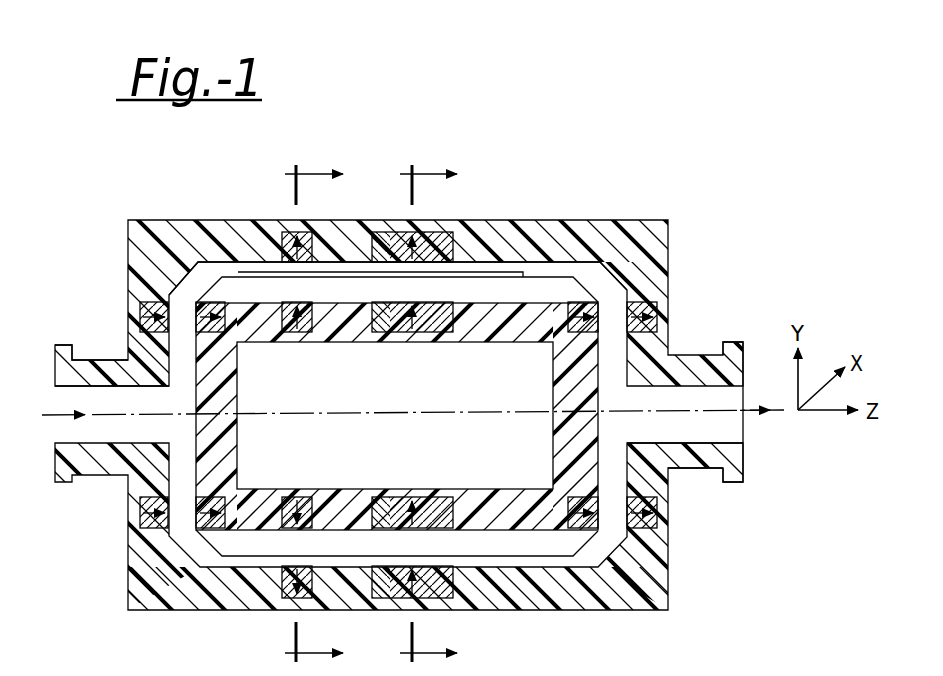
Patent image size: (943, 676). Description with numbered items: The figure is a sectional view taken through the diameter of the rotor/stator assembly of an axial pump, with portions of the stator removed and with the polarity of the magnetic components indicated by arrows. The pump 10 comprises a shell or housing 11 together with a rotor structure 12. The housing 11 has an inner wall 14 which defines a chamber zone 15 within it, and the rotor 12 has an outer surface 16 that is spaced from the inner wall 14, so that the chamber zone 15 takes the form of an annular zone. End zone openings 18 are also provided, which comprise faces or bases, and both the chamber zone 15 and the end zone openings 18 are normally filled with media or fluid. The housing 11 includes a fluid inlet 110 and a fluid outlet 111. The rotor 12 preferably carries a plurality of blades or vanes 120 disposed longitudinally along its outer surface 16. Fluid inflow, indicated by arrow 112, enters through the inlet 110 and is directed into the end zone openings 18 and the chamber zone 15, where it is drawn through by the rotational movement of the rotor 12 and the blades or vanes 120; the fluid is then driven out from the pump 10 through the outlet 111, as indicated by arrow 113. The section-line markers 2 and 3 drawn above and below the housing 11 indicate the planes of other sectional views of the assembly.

The pump 10 is at (668, 207).
The housing 11 is at (190, 222).
The rotor structure 12 is at (255, 297).
The inner wall 14 is at (478, 268).
The chamber zone 15 is at (520, 267).
The outer surface 16 is at (547, 300).
The blades or vanes 120 is at (577, 288).
The end zone openings 18 is at (612, 310).
The fluid inlet 110 is at (106, 388).
The arrow indicating fluid inflow 112 is at (43, 414).
The arrow indicating fluid outflow 113 is at (753, 413).
The fluid outlet 111 is at (679, 434).
The section line 2- 2 is at (436, 414).
The section line 3- 3 is at (322, 414).